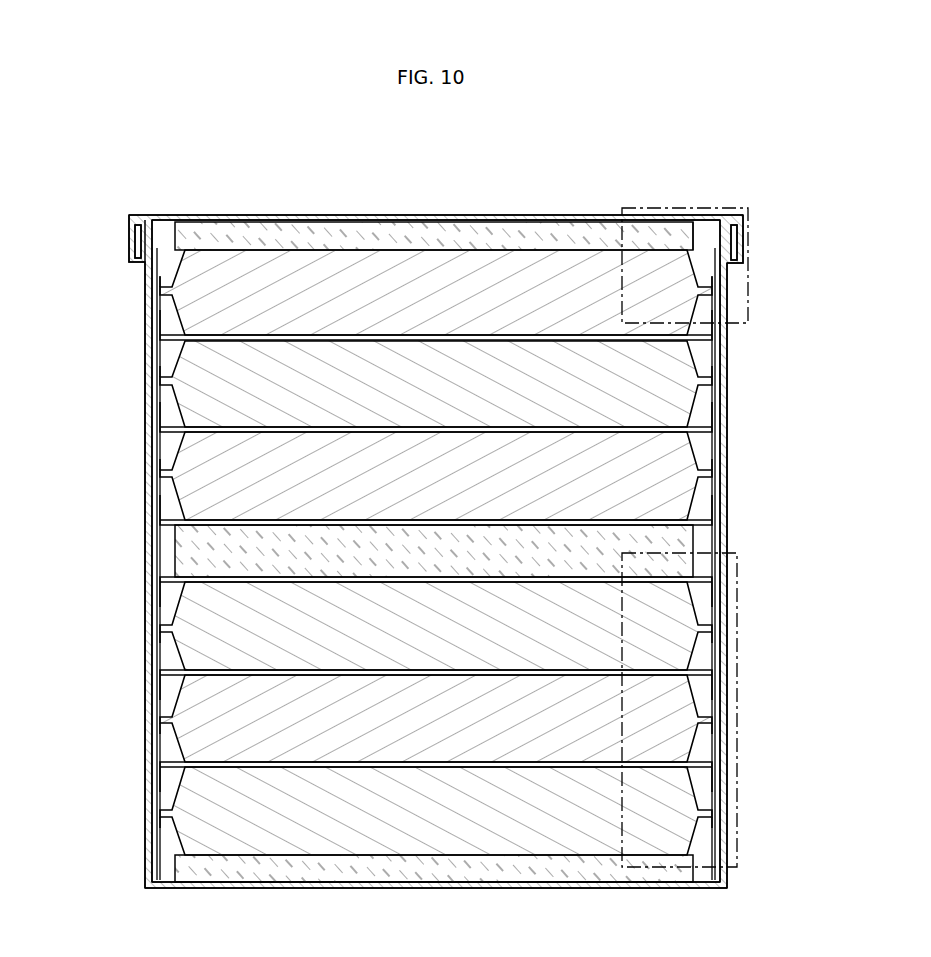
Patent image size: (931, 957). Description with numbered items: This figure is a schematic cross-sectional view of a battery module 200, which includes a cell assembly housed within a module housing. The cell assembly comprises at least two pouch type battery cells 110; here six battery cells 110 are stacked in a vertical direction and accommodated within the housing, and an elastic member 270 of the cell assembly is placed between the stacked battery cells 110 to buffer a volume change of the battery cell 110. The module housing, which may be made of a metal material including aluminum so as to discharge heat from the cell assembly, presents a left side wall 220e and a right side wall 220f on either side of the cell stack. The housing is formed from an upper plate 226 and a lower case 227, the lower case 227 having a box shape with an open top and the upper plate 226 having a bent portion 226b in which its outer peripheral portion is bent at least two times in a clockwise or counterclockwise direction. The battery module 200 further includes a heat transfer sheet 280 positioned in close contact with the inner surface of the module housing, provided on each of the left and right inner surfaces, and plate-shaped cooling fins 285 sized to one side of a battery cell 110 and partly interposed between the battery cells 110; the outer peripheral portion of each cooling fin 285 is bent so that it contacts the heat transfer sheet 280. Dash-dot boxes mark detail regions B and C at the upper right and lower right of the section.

The battery module 200 is at (240, 135).
The battery cell 110 is at (670, 306).
The left side wall 220e is at (145, 611).
The right side wall 220f is at (727, 672).
The upper plate 226 is at (343, 215).
The bent portion 226b is at (129, 254).
The lower case 227 is at (728, 878).
The elastic member 270 is at (535, 233).
The heat transfer sheet 280 is at (708, 253).
The cooling fin 285 is at (637, 340).
The detail region B is at (685, 247).
The detail region C is at (738, 712).